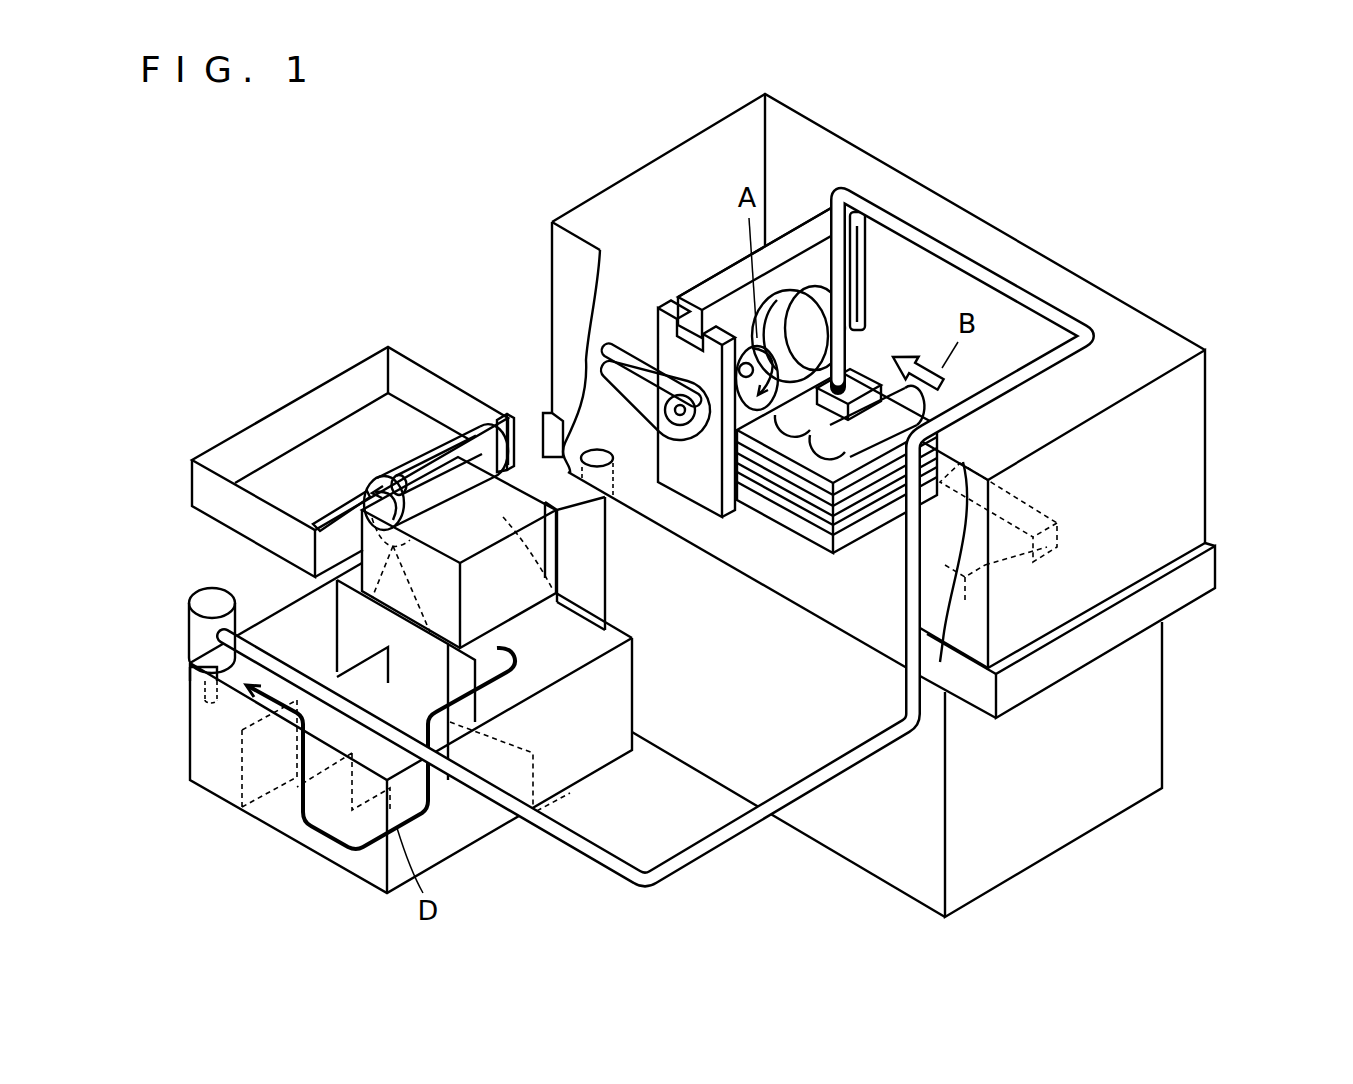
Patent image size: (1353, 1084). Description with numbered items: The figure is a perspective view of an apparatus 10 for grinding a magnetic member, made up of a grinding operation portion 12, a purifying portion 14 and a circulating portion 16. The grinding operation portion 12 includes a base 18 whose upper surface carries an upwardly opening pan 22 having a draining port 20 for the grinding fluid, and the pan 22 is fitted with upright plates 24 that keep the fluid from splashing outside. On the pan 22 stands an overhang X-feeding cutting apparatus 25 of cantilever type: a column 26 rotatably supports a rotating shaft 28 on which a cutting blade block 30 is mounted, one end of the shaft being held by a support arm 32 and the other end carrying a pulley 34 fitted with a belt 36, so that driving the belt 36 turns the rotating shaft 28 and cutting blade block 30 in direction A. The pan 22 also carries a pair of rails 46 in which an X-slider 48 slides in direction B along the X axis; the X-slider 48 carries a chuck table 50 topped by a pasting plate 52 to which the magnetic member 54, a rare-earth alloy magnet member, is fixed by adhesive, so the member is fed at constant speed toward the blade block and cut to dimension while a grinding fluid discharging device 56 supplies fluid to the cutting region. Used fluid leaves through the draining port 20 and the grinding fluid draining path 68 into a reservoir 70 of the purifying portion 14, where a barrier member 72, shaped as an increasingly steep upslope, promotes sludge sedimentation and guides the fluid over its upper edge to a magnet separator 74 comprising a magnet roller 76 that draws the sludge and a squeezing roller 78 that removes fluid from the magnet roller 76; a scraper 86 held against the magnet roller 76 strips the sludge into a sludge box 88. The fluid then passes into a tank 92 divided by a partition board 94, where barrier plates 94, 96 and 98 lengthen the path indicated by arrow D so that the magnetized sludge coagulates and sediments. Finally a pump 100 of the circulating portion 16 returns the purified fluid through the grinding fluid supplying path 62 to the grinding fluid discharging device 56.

The apparatus 10 is at (253, 169).
The grinding operation portion 12 is at (575, 186).
The purifying portion 14 is at (347, 440).
The circulating portion 16 is at (734, 853).
The base 18 is at (1143, 721).
The draining port 20 is at (597, 449).
The pan 22 is at (1207, 573).
The upright plates 24 is at (1193, 470).
The cutting apparatus 25 is at (718, 349).
The column 26 is at (661, 343).
The rotating shaft 28 is at (742, 363).
The cutting blade block 30 is at (778, 308).
The support arm 32 is at (809, 228).
The pulley 34 is at (688, 432).
The belt 36 is at (628, 343).
The rails 46 is at (980, 583).
The X-slider 48 is at (843, 540).
The chuck table 50 is at (838, 480).
The pasting plate 52 is at (826, 452).
The magnetic member 54 is at (790, 440).
The grinding fluid discharging device 56 is at (862, 368).
The grinding fluid supplying path 62 is at (968, 257).
The grinding fluid draining path 68 is at (574, 493).
The reservoir 70 is at (560, 569).
The barrier member 72 is at (490, 522).
The magnet separator 74 is at (407, 445).
The magnet roller 76 is at (439, 444).
The squeezing roller 78 is at (490, 418).
The scraper 86 is at (283, 518).
The sludge box 88 is at (335, 395).
The tank 92 is at (469, 855).
The partition board 94 is at (340, 628).
The barrier plate 96 is at (350, 792).
The barrier plate 98 is at (252, 767).
The pump 100 is at (189, 640).